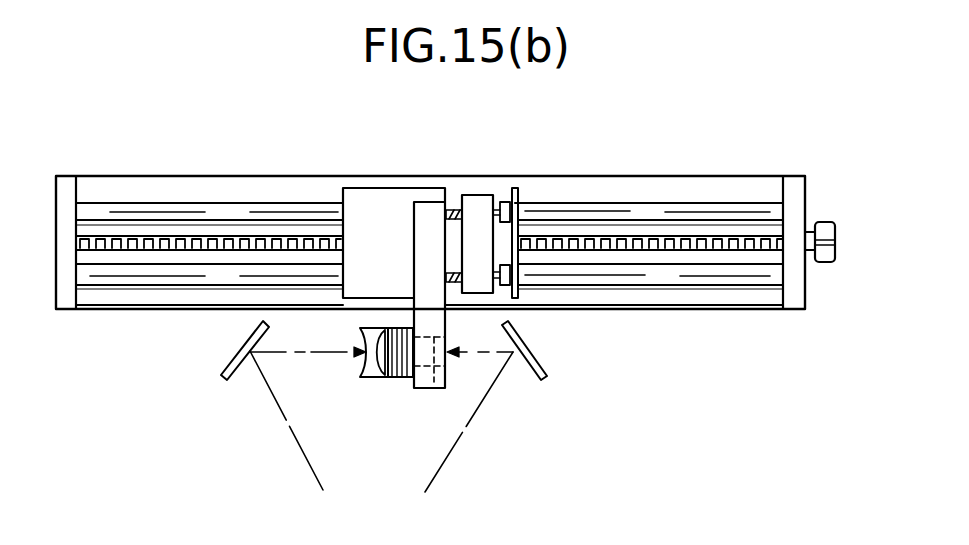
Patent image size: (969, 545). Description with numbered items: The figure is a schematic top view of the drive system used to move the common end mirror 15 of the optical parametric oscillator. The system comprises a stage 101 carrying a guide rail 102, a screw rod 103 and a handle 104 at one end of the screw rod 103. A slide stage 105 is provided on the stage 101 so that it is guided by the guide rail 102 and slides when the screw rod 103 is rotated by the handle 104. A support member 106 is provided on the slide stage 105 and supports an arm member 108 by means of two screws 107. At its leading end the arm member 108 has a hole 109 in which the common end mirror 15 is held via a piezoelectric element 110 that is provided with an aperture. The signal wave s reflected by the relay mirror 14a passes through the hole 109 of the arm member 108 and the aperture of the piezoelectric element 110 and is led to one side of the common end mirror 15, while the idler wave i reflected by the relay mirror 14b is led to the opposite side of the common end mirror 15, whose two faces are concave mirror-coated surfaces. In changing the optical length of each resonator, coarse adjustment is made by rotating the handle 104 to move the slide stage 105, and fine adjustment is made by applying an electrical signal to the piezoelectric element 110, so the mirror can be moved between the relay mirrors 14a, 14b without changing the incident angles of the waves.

The stage 101 is at (600, 176).
The guide rail 102 is at (683, 212).
The screw rod 103 is at (737, 236).
The handle 104 is at (825, 263).
The slide stage 105 is at (378, 193).
The support member 106 is at (481, 198).
The screws 107 is at (507, 203).
The arm member 108 is at (432, 205).
The hole 109 is at (437, 388).
The piezoelectric element 110 is at (395, 378).
The common end mirror 15 is at (378, 372).
The relay mirror 14a is at (543, 378).
The relay mirror 14b is at (222, 380).
The idler wave i is at (308, 436).
The signal wave s is at (463, 436).